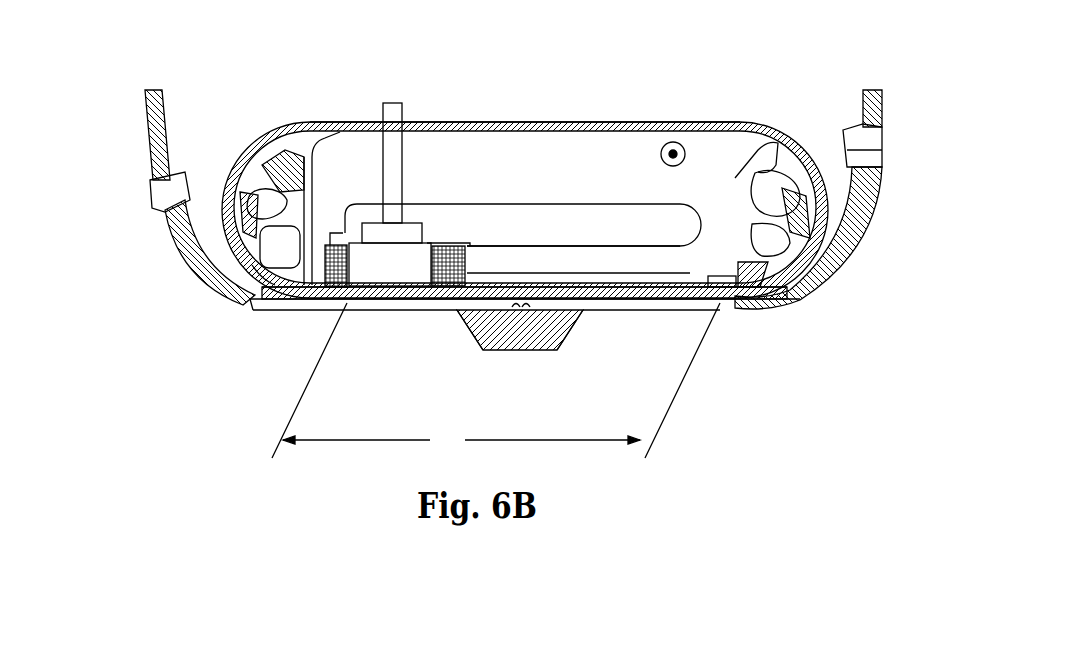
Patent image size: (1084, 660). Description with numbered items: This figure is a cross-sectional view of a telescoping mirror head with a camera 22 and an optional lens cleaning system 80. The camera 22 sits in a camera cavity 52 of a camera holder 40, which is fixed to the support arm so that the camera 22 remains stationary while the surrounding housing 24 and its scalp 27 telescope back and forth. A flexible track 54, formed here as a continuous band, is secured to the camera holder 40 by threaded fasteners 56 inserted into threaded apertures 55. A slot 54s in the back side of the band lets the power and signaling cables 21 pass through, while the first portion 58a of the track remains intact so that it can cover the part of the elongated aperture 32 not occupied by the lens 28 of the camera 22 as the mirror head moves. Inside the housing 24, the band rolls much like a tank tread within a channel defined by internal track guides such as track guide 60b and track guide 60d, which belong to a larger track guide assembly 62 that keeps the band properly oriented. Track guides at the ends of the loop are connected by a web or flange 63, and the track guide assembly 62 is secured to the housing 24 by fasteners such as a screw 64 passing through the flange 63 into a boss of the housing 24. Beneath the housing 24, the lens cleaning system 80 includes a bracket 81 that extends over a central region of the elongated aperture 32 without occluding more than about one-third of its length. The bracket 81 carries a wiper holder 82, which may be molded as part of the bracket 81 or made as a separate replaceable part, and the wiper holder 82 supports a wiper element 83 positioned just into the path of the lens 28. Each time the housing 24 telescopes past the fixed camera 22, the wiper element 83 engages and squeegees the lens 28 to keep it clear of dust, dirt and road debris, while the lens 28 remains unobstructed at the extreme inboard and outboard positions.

The cables 21 is at (383, 117).
The camera 22 is at (380, 263).
The housing 24 is at (145, 150).
The scalp 27 is at (190, 257).
The lens 28 is at (407, 285).
The elongated aperture 32 is at (496, 380).
The camera holder 40 is at (467, 243).
The camera cavity 52 is at (467, 258).
The flexible track 54 is at (313, 124).
The slot 54s is at (473, 120).
The threaded apertures 55 is at (263, 307).
The threaded fasteners 56 is at (323, 313).
The first portion 58a is at (237, 167).
The track guide 60b is at (753, 313).
The track guide 60d is at (337, 140).
The track guide assembly 62 is at (541, 160).
The flange 63 is at (637, 147).
The screw 64 is at (673, 142).
The lens cleaning system 80 is at (520, 358).
The bracket 81 is at (463, 330).
The wiper holder 82 is at (570, 337).
The wiper element 83 is at (620, 307).